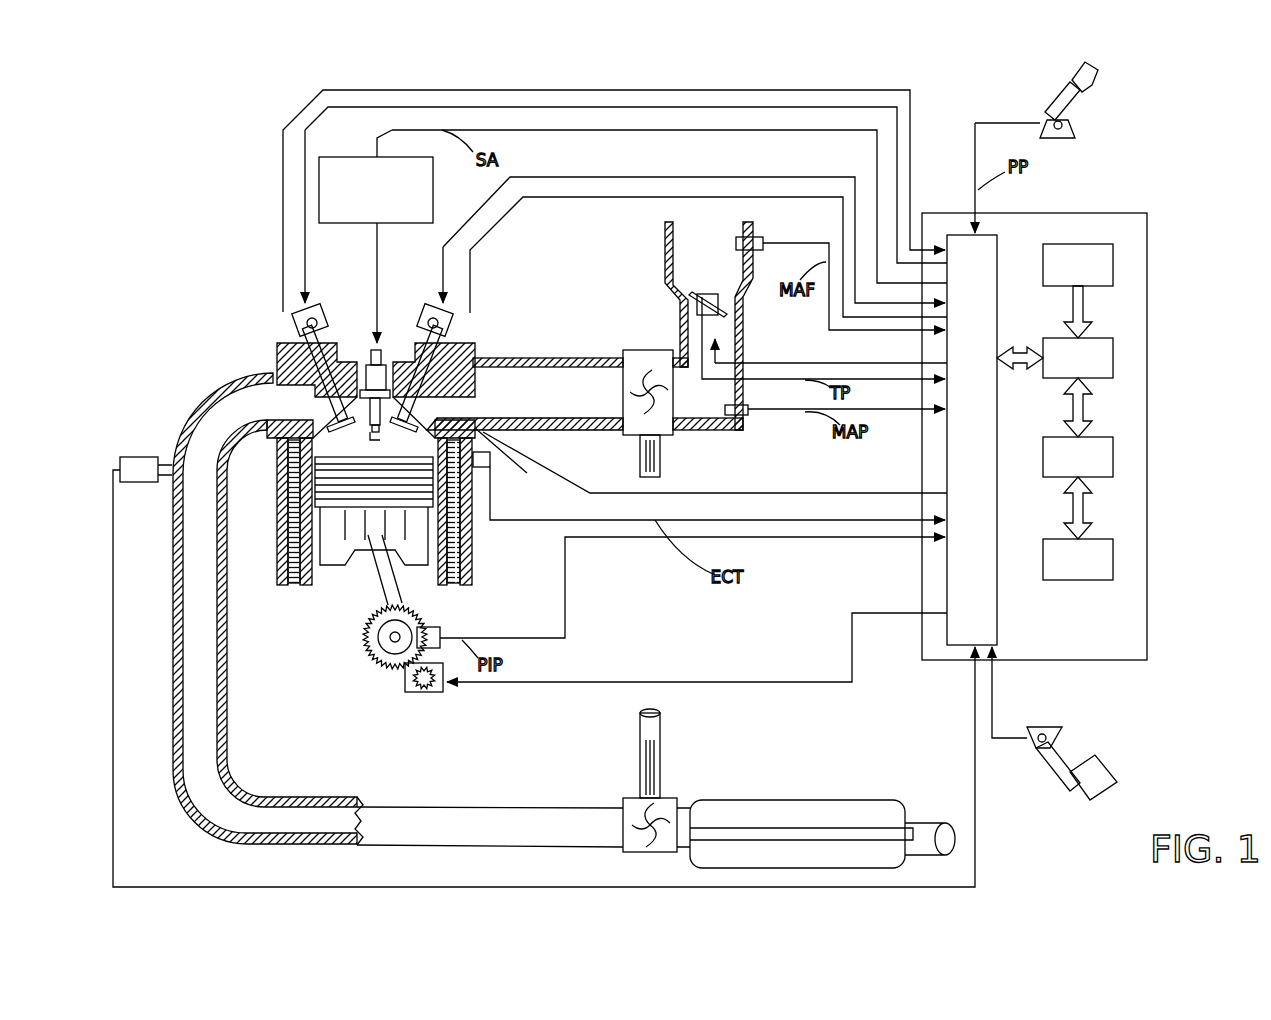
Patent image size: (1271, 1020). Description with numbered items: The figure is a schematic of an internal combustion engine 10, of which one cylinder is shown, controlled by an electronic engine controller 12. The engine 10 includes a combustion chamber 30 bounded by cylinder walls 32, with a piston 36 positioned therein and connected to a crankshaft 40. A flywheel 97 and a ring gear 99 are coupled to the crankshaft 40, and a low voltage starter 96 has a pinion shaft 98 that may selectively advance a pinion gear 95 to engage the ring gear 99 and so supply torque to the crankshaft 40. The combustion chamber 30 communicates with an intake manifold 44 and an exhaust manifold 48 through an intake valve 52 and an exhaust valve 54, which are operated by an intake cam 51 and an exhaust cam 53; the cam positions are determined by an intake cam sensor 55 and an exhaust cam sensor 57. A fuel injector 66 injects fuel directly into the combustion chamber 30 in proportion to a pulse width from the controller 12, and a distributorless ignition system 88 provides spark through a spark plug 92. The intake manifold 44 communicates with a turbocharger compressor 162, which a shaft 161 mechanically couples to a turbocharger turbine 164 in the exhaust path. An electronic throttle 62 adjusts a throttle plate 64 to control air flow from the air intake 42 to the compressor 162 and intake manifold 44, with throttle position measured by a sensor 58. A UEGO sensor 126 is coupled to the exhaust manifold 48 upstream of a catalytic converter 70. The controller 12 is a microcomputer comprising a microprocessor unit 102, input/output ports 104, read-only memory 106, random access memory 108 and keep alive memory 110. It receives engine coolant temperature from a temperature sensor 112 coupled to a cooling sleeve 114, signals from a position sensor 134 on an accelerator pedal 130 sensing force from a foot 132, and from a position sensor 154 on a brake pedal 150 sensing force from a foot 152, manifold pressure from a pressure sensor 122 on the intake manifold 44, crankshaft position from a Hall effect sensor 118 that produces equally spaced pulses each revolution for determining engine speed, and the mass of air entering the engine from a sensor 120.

The internal combustion engine 10 is at (210, 293).
The electronic engine controller 12 is at (1147, 213).
The combustion chamber 30 is at (375, 440).
The cylinder walls 32 is at (312, 585).
The piston 36 is at (350, 560).
The crankshaft 40 is at (382, 665).
The air intake 42 is at (709, 326).
The intake manifold 44 is at (585, 394).
The exhaust manifold 48 is at (431, 610).
The intake cam 51 is at (440, 315).
The intake valve 52 is at (437, 400).
The exhaust cam 53 is at (318, 312).
The exhaust valve 54 is at (330, 408).
The intake cam sensor 55 is at (453, 318).
The exhaust cam sensor 57 is at (298, 325).
The throttle position sensor 58 is at (697, 317).
The electronic throttle 62 is at (720, 300).
The throttle plate 64 is at (690, 300).
The fuel injector 66 is at (505, 462).
The catalytic converter 70 is at (748, 800).
The distributorless ignition system 88 is at (335, 157).
The spark plug 92 is at (380, 345).
The pinion gear 95 is at (435, 690).
The low voltage starter 96 is at (432, 690).
The flywheel 97 is at (372, 640).
The pinion shaft 98 is at (415, 690).
The ring gear 99 is at (392, 672).
The microprocessor unit 102 is at (1113, 358).
The input/output ports 104 is at (997, 245).
The read-only memory 106 is at (1113, 265).
The random access memory 108 is at (1113, 457).
The keep alive memory 110 is at (1113, 563).
The temperature sensor 112 is at (492, 467).
The cooling sleeve 114 is at (455, 540).
The Hall effect sensor 118 is at (440, 630).
The air mass sensor 120 is at (760, 237).
The pressure sensor 122 is at (745, 415).
The Universal Exhaust Gas Oxygen (UEGO) sensor 126 is at (120, 462).
The accelerator pedal 130 is at (1045, 105).
The foot 132 is at (1092, 78).
The position sensor 134 is at (1075, 130).
The brake pedal 150 is at (1067, 787).
The foot 152 is at (1097, 760).
The position sensor 154 is at (1030, 730).
The shaft 161 is at (640, 455).
The turbocharger compressor 162 is at (623, 350).
The turbocharger turbine 164 is at (628, 798).